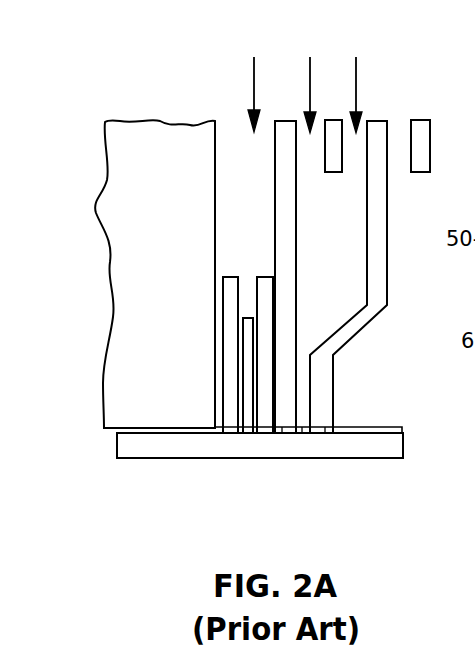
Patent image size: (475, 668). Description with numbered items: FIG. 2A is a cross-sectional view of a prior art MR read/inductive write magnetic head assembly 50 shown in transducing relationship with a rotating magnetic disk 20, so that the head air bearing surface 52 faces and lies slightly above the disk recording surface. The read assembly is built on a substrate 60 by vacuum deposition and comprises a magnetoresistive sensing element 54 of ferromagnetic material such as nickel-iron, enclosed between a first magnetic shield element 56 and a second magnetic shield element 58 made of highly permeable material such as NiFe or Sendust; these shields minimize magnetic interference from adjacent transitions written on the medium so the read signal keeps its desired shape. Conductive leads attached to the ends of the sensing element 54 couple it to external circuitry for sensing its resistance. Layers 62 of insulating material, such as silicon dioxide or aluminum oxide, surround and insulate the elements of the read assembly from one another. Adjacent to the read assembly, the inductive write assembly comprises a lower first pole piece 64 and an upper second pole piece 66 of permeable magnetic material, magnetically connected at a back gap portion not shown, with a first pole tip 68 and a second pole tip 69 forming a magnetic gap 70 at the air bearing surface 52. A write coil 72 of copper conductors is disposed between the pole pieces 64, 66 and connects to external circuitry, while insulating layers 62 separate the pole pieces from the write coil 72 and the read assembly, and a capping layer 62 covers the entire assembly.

The rotating magnetic disk 20 is at (404, 446).
The magnetic head assembly 50 is at (93, 257).
The air bearing surface 52 is at (375, 427).
The magnetoresistive sensing element 54 is at (247, 433).
The first magnetic shield element 56 is at (228, 433).
The second magnetic shield element 58 is at (262, 433).
The substrate 60 is at (108, 325).
The insulating layers 62 is at (305, 82).
The first pole piece 64 is at (275, 190).
The second pole piece 66 is at (388, 226).
The first pole tip 68 is at (282, 433).
The second pole tip 69 is at (325, 433).
The magnetic gap 70 is at (302, 433).
The write coil 72 is at (331, 120).